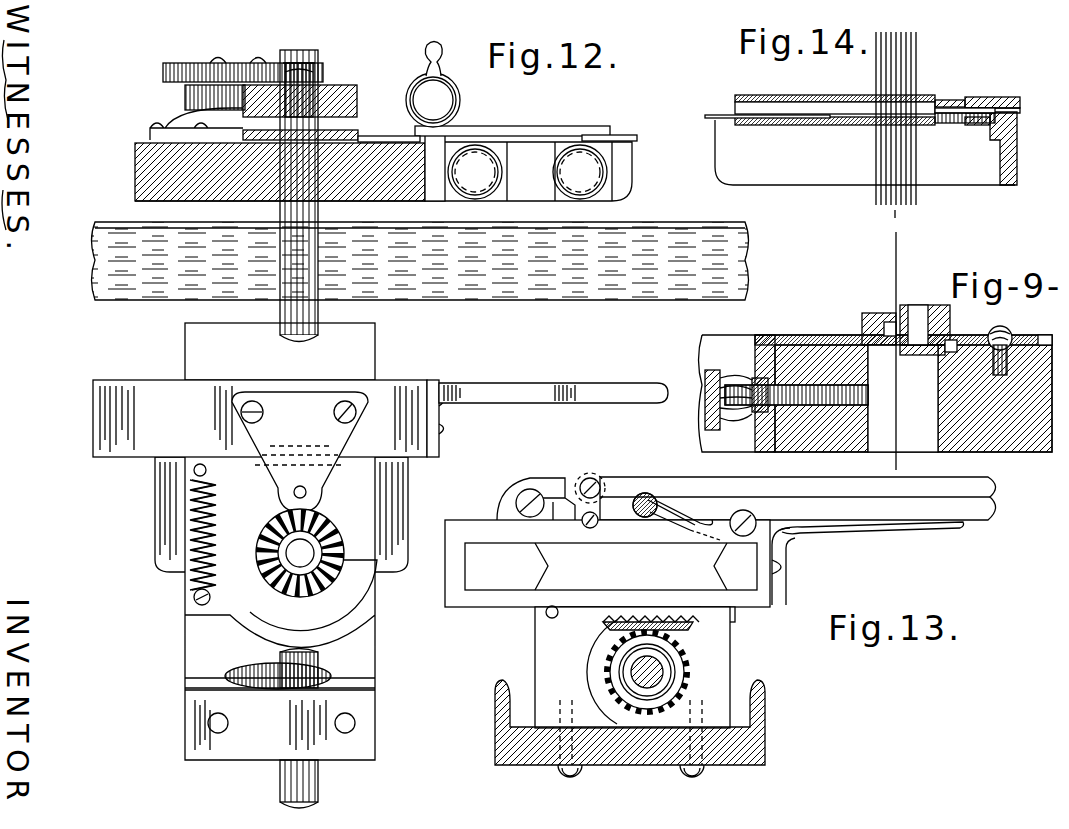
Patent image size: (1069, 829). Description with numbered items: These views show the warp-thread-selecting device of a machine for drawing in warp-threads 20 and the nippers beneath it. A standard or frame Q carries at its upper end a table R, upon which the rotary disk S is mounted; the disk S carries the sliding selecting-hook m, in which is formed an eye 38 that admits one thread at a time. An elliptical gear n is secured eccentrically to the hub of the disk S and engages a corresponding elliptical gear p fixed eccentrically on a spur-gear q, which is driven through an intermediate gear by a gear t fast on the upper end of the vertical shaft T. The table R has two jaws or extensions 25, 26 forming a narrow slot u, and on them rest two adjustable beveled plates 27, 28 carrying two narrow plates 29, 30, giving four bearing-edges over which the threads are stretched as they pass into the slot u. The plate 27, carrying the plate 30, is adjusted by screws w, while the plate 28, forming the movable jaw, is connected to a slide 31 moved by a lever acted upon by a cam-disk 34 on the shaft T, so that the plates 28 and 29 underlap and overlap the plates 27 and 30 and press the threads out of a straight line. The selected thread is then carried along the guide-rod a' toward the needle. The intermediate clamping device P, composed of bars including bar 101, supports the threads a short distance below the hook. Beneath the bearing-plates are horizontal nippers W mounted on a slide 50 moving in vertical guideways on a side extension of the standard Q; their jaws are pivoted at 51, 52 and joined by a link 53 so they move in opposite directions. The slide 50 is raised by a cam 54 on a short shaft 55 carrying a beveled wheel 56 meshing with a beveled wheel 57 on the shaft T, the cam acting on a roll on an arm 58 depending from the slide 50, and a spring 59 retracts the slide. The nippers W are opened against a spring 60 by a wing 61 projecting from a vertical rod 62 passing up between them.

In FIG. 12, the table R is at (160, 175).
In FIG. 14, the table R is at (1018, 160).
In FIG. 12, the jaw or extension 26 is at (630, 172).
In FIG. 14, the jaw or extension 26 is at (865, 152).
In FIG. 9, the jaw or extension 26 is at (836, 432).
In FIG. 12, the screws w is at (527, 172).
In FIG. 9, the screws w is at (708, 404).
In FIG. 12, the narrow plate 30 is at (513, 126).
In FIG. 14, the narrow plate 30 is at (846, 103).
In FIG. 9, the narrow plate 30 is at (886, 313).
In FIG. 12, the adjustable plate 27 is at (622, 134).
In FIG. 14, the adjustable plate 27 is at (726, 114).
In FIG. 9, the adjustable plate 27 is at (808, 336).
In FIG. 12, the slide 31 is at (440, 100).
In FIG. 12, the guide-rod a' is at (417, 50).
In FIG. 12, the elliptical gear p is at (186, 62).
In FIG. 12, the spur-gear q is at (184, 96).
In FIG. 12, the gear t is at (330, 92).
In FIG. 12, the elliptical gear n is at (294, 62).
In FIG. 12, the cam-disk 34 is at (350, 130).
In FIG. 12, the rotary disk S is at (370, 138).
In FIG. 14, the rotary disk S is at (992, 91).
In FIG. 12, the intermediate clamping device P is at (420, 261).
In FIG. 12, the bar 101 is at (485, 250).
In FIG. 12, the vertical shaft T is at (290, 322).
In FIG. 13, the vertical shaft T is at (640, 672).
In FIG. 12, the slide 50 is at (268, 418).
In FIG. 13, the slide 50 is at (607, 563).
In FIG. 12, the spring 60 is at (508, 382).
In FIG. 13, the spring 60 is at (862, 532).
In FIG. 12, the nippers W is at (615, 382).
In FIG. 13, the nippers W is at (893, 500).
In FIG. 12, the arm 58 is at (292, 486).
In FIG. 13, the arm 58 is at (712, 620).
In FIG. 12, the beveled wheel 56 is at (268, 570).
In FIG. 13, the beveled wheel 56 is at (604, 630).
In FIG. 12, the short shaft 55 is at (300, 553).
In FIG. 12, the cam 54 is at (313, 595).
In FIG. 13, the cam 54 is at (735, 612).
In FIG. 12, the spring 59 is at (188, 570).
In FIG. 13, the spring 59 is at (545, 612).
In FIG. 13, the beveled wheel 57 is at (648, 672).
In FIG. 13, the pivot 52 is at (790, 540).
In FIG. 13, the link 53 is at (580, 505).
In FIG. 13, the pivot 51 is at (527, 492).
In FIG. 13, the vertical rod 62 is at (642, 498).
In FIG. 13, the wing or plate 61 is at (665, 498).
In FIG. 13, the standard or frame Q is at (632, 766).
In FIG. 14, the narrow plate 29 is at (806, 96).
In FIG. 9, the narrow plate 29 is at (920, 306).
In FIG. 14, the adjustable plate 28 is at (862, 126).
In FIG. 9, the adjustable plate 28 is at (1022, 342).
In FIG. 14, the selecting-hook m is at (925, 112).
In FIG. 14, the eye or aperture 38 is at (930, 112).
In FIG. 14, the warp-threads 20 is at (905, 73).
In FIG. 9, the warp-threads 20 is at (896, 256).
In FIG. 9, the jaw or extension 25 is at (996, 435).
In FIG. 9, the slot u is at (903, 398).